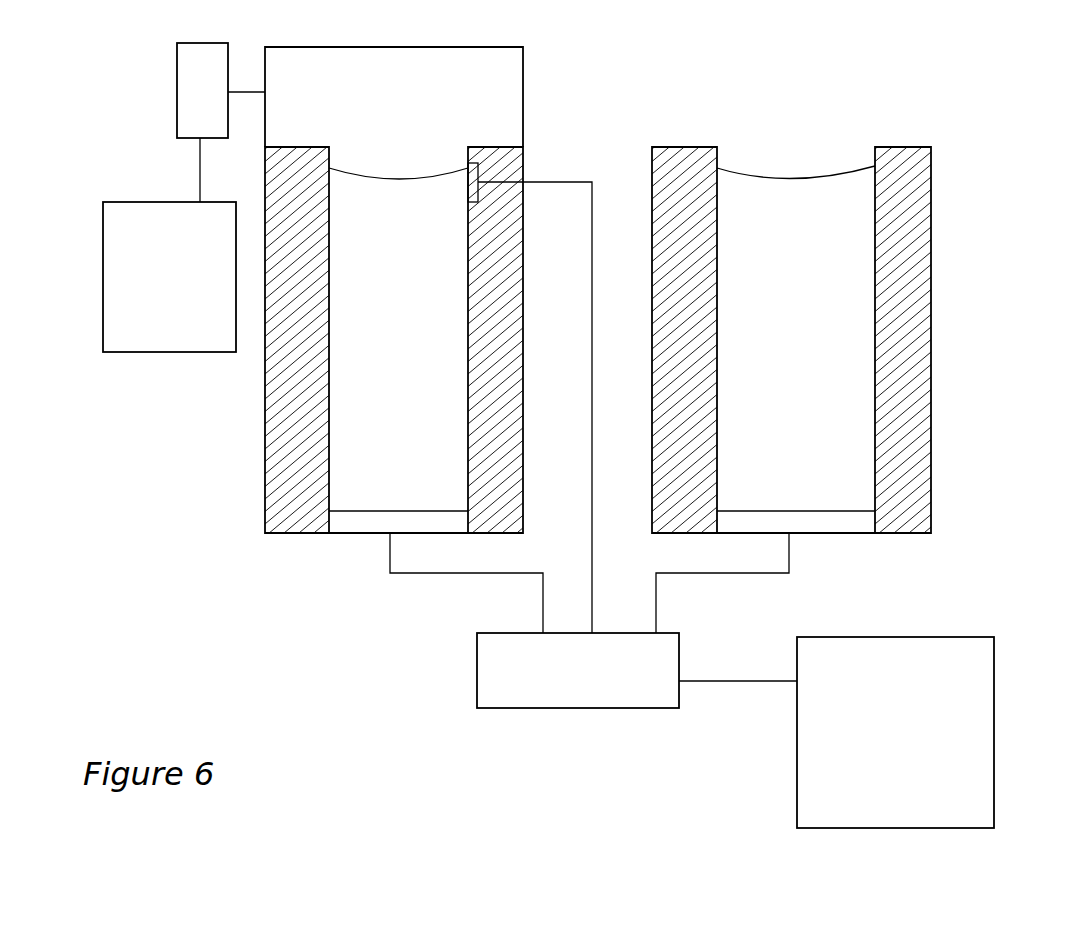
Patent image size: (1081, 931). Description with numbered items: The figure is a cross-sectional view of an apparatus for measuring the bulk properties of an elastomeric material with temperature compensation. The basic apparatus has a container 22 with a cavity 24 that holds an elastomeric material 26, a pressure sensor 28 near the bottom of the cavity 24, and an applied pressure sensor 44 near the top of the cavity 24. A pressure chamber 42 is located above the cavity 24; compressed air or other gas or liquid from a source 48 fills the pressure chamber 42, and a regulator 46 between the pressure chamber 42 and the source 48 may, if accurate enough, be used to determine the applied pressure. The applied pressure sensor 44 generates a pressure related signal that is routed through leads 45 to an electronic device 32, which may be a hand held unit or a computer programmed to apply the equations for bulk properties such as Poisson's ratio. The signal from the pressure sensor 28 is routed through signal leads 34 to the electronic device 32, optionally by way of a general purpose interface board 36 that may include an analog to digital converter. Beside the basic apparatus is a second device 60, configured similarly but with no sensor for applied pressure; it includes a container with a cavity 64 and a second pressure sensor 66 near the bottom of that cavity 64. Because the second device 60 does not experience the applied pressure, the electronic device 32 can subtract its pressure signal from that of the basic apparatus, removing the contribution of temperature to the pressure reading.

The container 22 is at (280, 445).
The cavity 24 is at (369, 160).
The elastomeric material 26 is at (412, 351).
The pressure sensor 28 is at (364, 524).
The electronic device 32 is at (985, 690).
The signal leads 34 is at (435, 575).
The general purpose interface board 36 is at (488, 676).
The pressure chamber 42 is at (508, 77).
The applied pressure sensor 44 is at (471, 172).
The leads 45 is at (594, 266).
The regulator 46 is at (183, 100).
The source 48 is at (148, 201).
The second device 60 is at (939, 136).
The cavity 64 is at (787, 160).
The second pressure sensor 66 is at (816, 523).